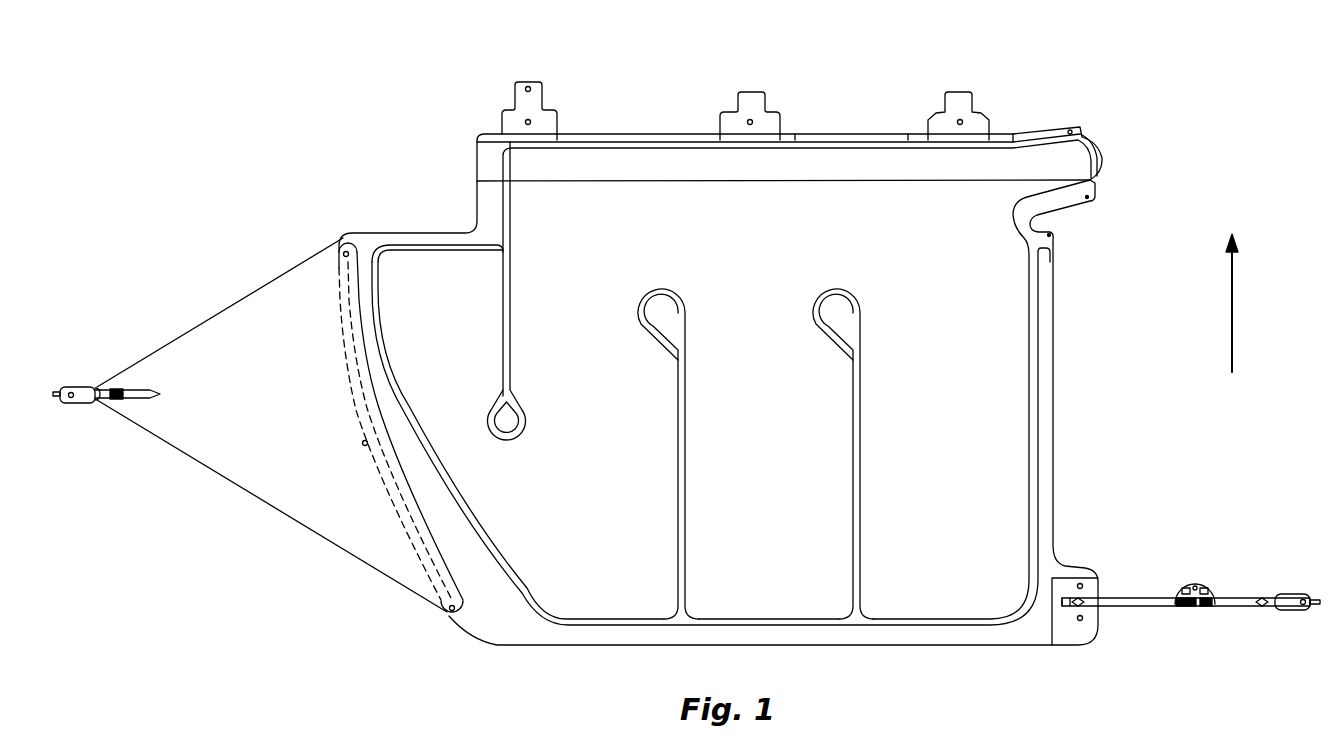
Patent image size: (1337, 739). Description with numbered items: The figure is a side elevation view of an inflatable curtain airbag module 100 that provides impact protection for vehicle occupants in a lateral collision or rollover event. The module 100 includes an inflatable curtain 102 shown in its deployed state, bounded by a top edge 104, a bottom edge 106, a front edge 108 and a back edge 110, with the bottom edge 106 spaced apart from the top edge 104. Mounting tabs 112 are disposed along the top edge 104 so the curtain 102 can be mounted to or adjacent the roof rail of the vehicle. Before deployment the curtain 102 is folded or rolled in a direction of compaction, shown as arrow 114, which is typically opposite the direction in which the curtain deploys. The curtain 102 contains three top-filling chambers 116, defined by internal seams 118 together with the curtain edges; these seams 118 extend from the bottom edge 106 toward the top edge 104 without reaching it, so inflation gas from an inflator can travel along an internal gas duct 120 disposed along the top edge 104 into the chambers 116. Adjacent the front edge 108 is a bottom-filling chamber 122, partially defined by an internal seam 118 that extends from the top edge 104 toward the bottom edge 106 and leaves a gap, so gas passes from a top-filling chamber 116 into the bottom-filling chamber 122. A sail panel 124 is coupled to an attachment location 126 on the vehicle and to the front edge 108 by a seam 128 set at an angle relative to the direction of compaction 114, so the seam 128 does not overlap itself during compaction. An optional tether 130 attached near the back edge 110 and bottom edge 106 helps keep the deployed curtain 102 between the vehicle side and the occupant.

The inflatable curtain airbag module 100 is at (340, 128).
The inflatable curtain 102 is at (452, 637).
The top edge 104 is at (640, 133).
The bottom edge 106 is at (983, 646).
The front edge 108 is at (340, 318).
The back edge 110 is at (1060, 313).
The mounting tabs 112 is at (527, 110).
The direction of compaction 114 is at (1233, 309).
The top-filling chambers 116 is at (552, 332).
The internal seams 118 is at (510, 377).
The internal gas duct 120 is at (862, 163).
The bottom-filling chamber 122 is at (425, 346).
The sail panel 124 is at (202, 430).
The attachment location 126 is at (80, 386).
The seam 128 is at (397, 510).
The tether 130 is at (1233, 607).